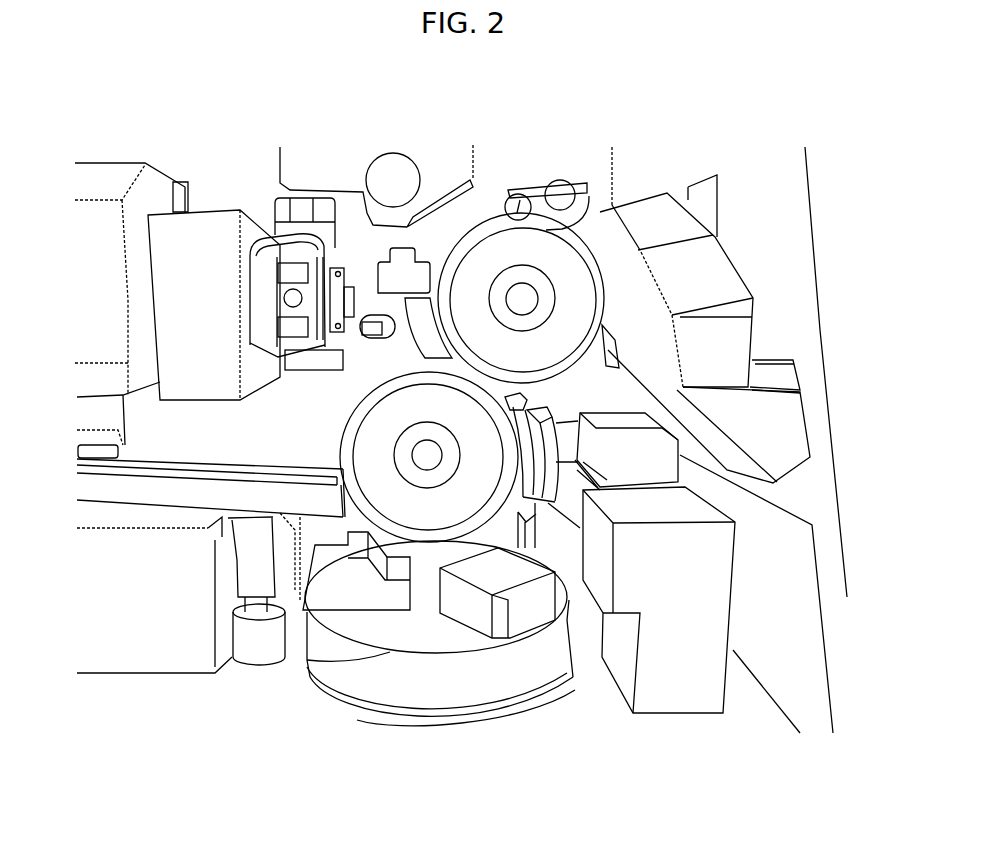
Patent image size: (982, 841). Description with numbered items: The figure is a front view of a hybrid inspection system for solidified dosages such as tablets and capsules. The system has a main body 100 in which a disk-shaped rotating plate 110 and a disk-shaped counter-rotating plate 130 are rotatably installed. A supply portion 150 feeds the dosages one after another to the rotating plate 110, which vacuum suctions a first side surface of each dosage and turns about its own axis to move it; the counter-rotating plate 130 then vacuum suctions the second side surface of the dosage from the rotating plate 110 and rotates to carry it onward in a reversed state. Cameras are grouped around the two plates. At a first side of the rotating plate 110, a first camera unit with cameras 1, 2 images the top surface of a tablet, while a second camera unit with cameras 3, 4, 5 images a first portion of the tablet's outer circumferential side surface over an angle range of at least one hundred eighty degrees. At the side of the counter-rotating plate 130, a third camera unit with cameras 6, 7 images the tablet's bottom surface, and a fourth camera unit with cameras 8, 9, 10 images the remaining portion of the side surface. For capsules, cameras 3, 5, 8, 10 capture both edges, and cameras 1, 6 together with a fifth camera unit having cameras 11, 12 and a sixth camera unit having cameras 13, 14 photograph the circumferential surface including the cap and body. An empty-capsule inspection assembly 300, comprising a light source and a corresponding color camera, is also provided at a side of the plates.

The camera 1 is at (617, 450).
The camera 2 is at (578, 495).
The camera 3 is at (509, 455).
The camera 4 is at (504, 452).
The camera 5 is at (506, 412).
The camera 6 is at (302, 298).
The camera 7 is at (398, 180).
The camera 8 is at (252, 345).
The camera 9 is at (218, 267).
The camera 10 is at (250, 253).
The camera 11 is at (659, 600).
The camera 12 is at (540, 454).
The camera 13 is at (214, 305).
The camera 14 is at (404, 270).
The main body 100 is at (237, 672).
The rotating plate 110 is at (422, 510).
The counter-rotating plate 130 is at (578, 228).
The supply portion 150 is at (478, 686).
The empty-capsule inspection assembly 300 is at (523, 194).